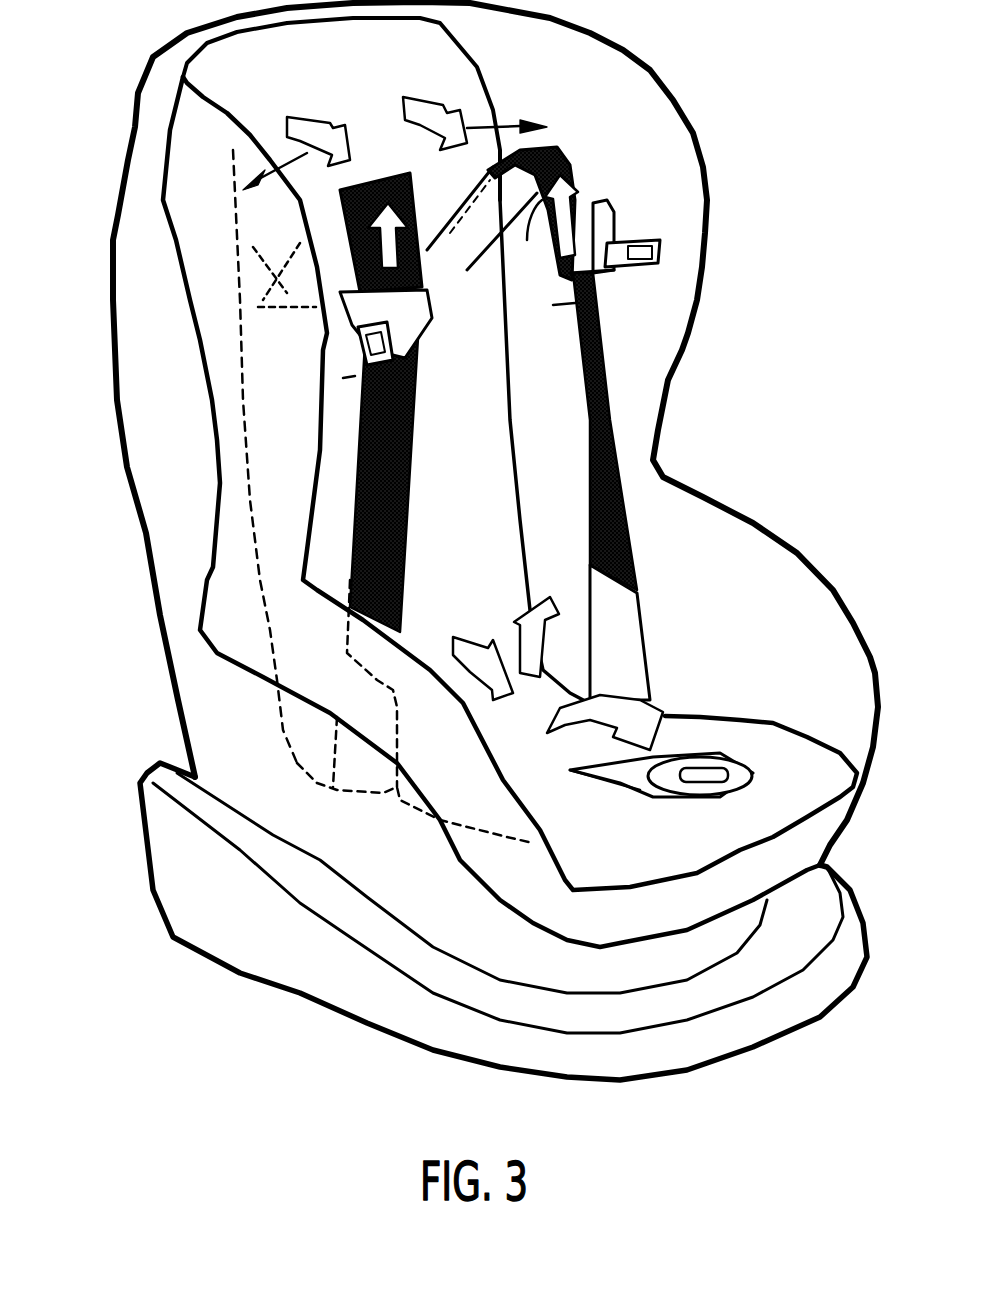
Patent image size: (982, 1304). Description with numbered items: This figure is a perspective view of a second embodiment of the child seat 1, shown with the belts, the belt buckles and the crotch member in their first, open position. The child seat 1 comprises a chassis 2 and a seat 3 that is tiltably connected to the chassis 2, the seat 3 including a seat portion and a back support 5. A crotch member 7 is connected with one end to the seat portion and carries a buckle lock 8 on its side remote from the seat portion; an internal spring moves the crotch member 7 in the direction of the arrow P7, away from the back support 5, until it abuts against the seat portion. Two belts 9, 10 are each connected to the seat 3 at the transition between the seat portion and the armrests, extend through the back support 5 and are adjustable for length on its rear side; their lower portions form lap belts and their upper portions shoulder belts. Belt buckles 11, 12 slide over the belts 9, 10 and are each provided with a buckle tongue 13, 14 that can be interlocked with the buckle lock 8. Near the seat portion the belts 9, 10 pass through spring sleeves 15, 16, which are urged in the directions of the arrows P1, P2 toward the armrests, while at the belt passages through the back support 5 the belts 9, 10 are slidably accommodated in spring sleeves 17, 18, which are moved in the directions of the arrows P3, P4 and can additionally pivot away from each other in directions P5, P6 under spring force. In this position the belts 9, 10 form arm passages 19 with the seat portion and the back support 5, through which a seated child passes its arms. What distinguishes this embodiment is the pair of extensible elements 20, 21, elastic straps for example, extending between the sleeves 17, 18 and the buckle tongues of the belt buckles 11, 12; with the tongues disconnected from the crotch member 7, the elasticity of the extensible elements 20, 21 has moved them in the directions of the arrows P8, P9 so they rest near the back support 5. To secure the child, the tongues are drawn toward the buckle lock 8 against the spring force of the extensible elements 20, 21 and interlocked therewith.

The child seat 1 is at (720, 187).
The chassis 2 is at (303, 963).
The seat 3 is at (173, 323).
The back support 5 is at (480, 478).
The crotch member 7 is at (613, 777).
The buckle lock 8 is at (715, 785).
The belt 9 is at (367, 462).
The belt 10 is at (611, 409).
The belt buckle 11 is at (407, 307).
The belt buckle 12 is at (600, 223).
The buckle tongue 13 is at (417, 363).
The buckle tongue 14 is at (650, 242).
The spring sleeve 15 is at (375, 724).
The spring sleeve 16 is at (630, 647).
The spring sleeve 17 is at (274, 456).
The spring sleeve 18 is at (487, 220).
The arm passage 19 is at (553, 305).
The extensible element 20 is at (365, 228).
The extensible element 21 is at (530, 238).
The arrow P1 is at (480, 637).
The arrow P2 is at (547, 607).
The arrow P3 is at (312, 125).
The arrow P4 is at (447, 127).
The direction P5 is at (262, 162).
The direction P6 is at (510, 123).
The arrow P7 is at (637, 717).
The arrow P8 is at (423, 250).
The arrow P9 is at (560, 190).